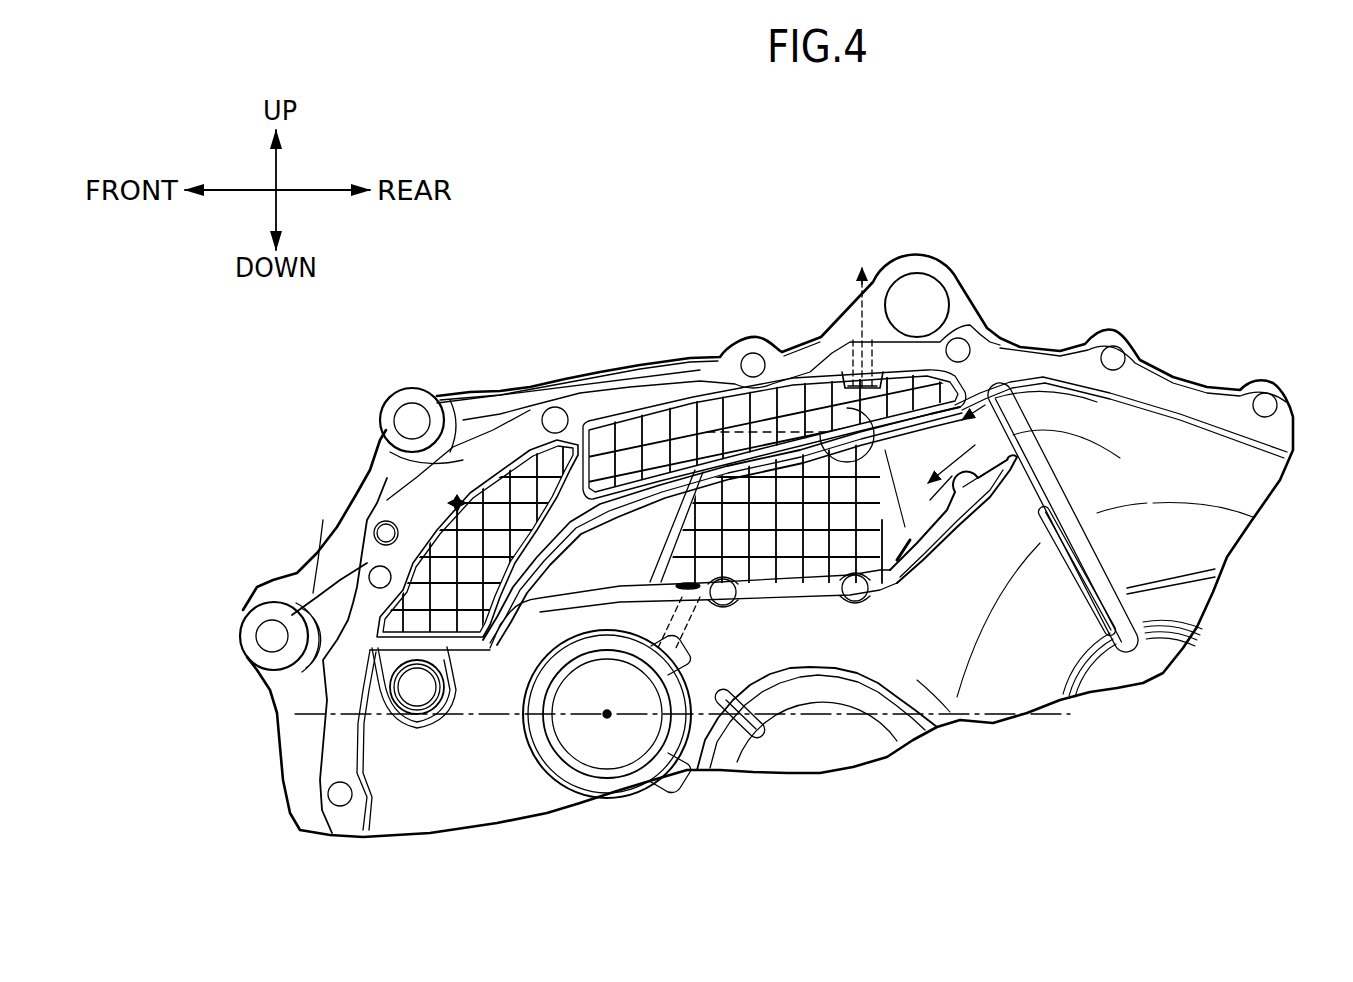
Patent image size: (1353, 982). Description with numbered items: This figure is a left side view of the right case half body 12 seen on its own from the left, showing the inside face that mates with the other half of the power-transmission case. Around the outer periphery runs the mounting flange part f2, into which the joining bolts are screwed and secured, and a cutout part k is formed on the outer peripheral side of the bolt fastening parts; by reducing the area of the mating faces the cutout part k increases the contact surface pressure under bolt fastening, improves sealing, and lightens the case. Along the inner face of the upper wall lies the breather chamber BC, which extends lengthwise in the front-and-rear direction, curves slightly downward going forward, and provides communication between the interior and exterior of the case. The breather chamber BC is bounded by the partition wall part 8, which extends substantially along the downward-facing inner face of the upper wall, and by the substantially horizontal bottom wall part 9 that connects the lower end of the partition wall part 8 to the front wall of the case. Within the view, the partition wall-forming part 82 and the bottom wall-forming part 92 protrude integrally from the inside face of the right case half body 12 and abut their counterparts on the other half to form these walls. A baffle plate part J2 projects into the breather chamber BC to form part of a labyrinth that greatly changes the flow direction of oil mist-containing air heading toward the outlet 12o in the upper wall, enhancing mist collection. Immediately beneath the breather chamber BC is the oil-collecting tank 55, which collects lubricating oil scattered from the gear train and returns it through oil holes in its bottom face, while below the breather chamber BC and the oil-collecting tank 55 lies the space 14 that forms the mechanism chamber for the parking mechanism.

The right case half body 12 is at (1190, 372).
The outlet 12o is at (857, 337).
The space 14 is at (480, 776).
The partition wall part 8 is at (637, 477).
The partition wall-forming part 82 is at (563, 525).
The bottom wall-forming part 92 is at (440, 645).
The bottom wall part 9 is at (420, 633).
The oil-collecting tank 55 is at (800, 592).
The mounting flange part f2 is at (700, 372).
The baffle plate part J2 is at (543, 443).
The breather chamber BC is at (455, 502).
The cutout part k is at (1113, 331).